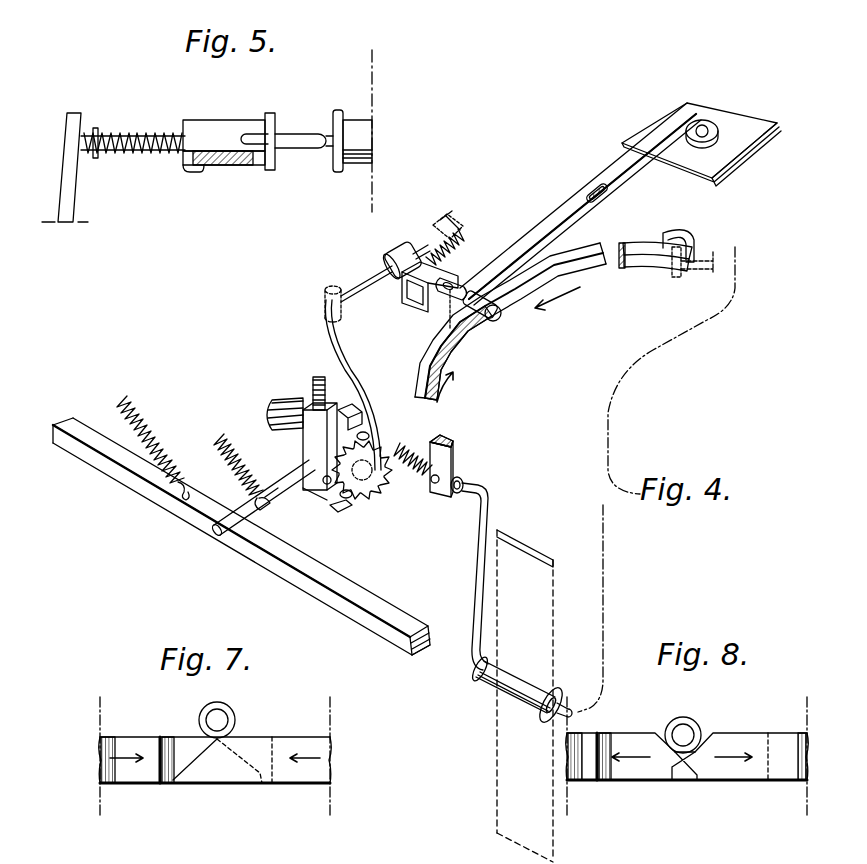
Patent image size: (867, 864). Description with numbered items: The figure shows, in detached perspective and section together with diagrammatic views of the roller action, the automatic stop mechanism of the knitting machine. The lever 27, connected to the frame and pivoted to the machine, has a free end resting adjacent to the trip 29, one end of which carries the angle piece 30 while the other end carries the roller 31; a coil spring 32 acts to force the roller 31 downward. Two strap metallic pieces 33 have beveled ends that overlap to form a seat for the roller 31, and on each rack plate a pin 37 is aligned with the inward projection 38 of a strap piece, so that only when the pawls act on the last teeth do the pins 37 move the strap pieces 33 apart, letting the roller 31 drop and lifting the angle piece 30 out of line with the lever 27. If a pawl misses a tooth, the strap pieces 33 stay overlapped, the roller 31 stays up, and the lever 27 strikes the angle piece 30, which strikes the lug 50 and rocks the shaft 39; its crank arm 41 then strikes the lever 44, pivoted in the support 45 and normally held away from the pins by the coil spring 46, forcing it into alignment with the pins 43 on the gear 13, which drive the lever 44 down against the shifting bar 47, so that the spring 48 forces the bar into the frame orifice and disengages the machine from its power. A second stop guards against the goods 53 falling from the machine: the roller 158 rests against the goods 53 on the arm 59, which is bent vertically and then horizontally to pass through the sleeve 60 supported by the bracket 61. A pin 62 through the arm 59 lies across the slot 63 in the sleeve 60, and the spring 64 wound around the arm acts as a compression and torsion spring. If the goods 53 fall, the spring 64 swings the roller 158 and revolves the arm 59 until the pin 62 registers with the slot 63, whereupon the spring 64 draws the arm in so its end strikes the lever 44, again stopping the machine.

In FIG. 4, the gear 13 is at (362, 500).
In FIG. 4, the lever 27 is at (581, 204).
In FIG. 4, the trip 29 is at (405, 303).
In FIG. 4, the angle piece 30 is at (358, 281).
In FIG. 4, the roller 31 is at (493, 313).
In FIG. 7, the roller 31 is at (226, 717).
In FIG. 8, the roller 31 is at (688, 727).
In FIG. 4, the coil spring 32 is at (463, 250).
In FIG. 4, the strap metallic pieces 33 is at (428, 357).
In FIG. 7, the strap metallic pieces 33 is at (133, 785).
In FIG. 8, the strap metallic pieces 33 is at (640, 783).
In FIG. 4, the pin 37 is at (672, 258).
In FIG. 4, the inward projection 38 is at (697, 244).
In FIG. 4, the shaft 39 is at (323, 304).
In FIG. 4, the crank arm 41 is at (344, 358).
In FIG. 4, the pins 43 is at (360, 412).
In FIG. 5, the lever 44 is at (64, 153).
In FIG. 4, the lever 44 is at (288, 480).
In FIG. 4, the support 45 is at (303, 436).
In FIG. 4, the coil spring 46 is at (214, 440).
In FIG. 4, the shifting bar 47 is at (300, 580).
In FIG. 4, the spring 48 is at (137, 408).
In FIG. 4, the lug 50 is at (393, 271).
In FIG. 4, the goods 53 is at (550, 615).
In FIG. 5, the arm 59 is at (305, 151).
In FIG. 4, the arm 59 is at (473, 593).
In FIG. 5, the sleeve 60 is at (222, 126).
In FIG. 4, the sleeve 60 is at (443, 482).
In FIG. 5, the bracket 61 is at (232, 166).
In FIG. 4, the bracket 61 is at (455, 452).
In FIG. 5, the pin 62 is at (273, 121).
In FIG. 4, the pin 62 is at (468, 487).
In FIG. 5, the slot 63 is at (246, 133).
In FIG. 5, the spring 64 is at (135, 134).
In FIG. 5, the roller 158 is at (357, 125).
In FIG. 4, the roller 158 is at (517, 682).